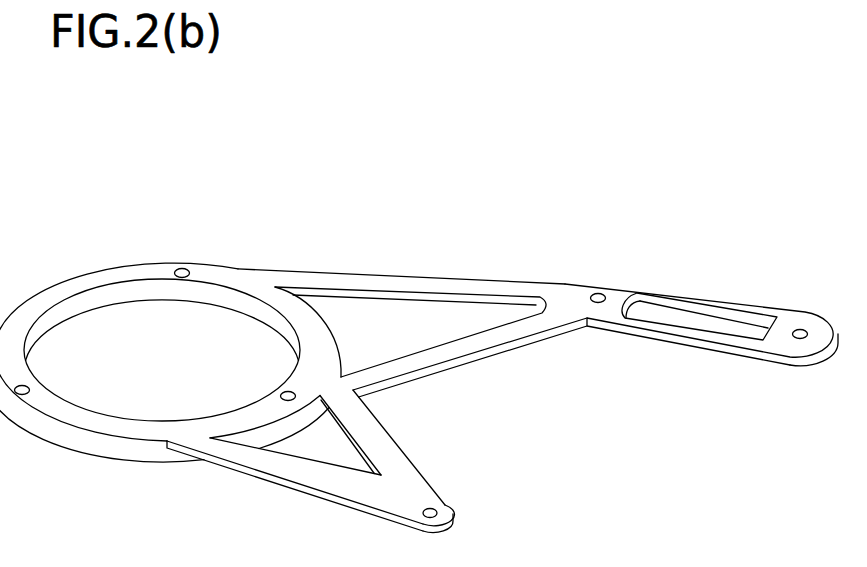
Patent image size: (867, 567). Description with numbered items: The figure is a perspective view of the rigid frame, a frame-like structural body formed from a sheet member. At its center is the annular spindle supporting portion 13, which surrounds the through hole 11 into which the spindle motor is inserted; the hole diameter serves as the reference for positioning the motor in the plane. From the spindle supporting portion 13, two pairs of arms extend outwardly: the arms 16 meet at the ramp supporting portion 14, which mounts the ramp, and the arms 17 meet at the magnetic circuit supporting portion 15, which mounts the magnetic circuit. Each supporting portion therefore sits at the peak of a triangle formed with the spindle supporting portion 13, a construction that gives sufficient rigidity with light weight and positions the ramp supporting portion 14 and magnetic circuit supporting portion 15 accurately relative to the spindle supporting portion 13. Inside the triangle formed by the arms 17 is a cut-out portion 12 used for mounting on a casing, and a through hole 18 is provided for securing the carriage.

The through hole 11 is at (53, 393).
The cut-out portion 12 is at (400, 320).
The spindle supporting portion 13 is at (222, 270).
The ramp supporting portion 14 is at (413, 492).
The magnetic circuit supporting portion 15 is at (630, 283).
The arms 16 is at (383, 437).
The arms 17 is at (487, 283).
The through hole 18 is at (598, 293).